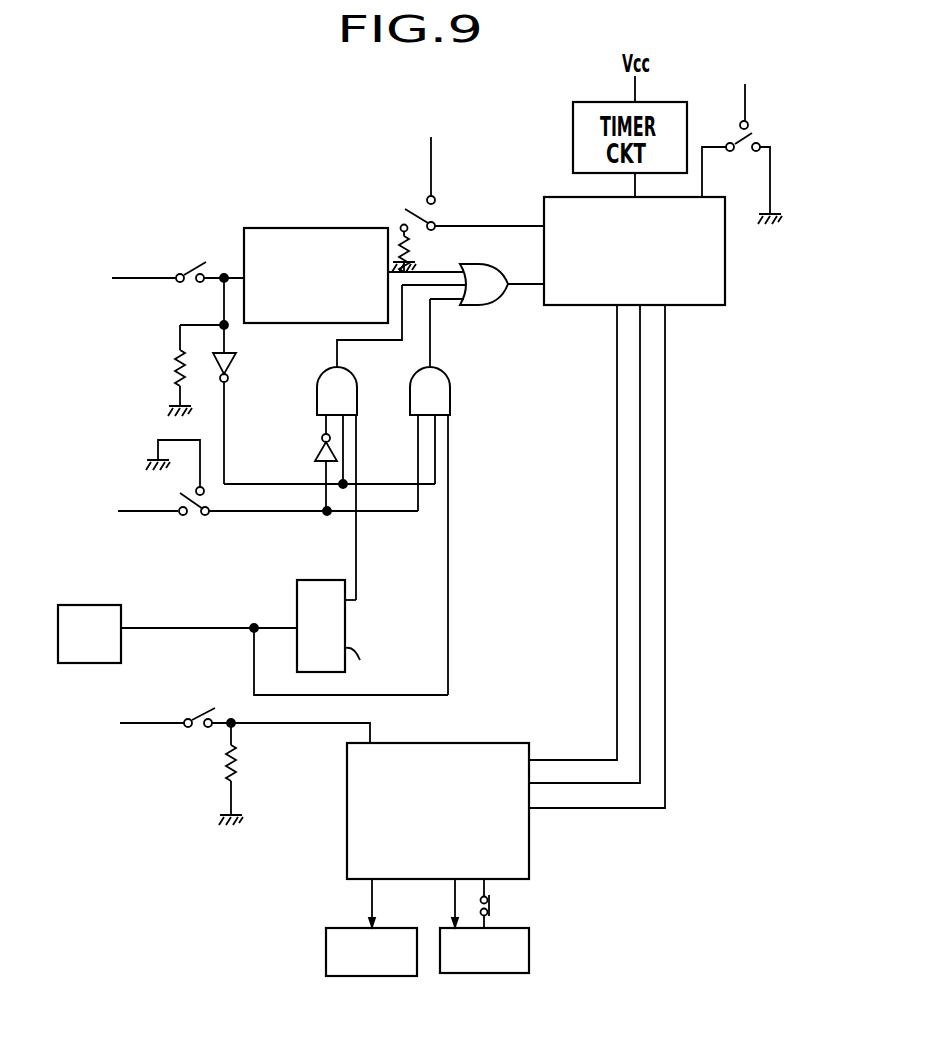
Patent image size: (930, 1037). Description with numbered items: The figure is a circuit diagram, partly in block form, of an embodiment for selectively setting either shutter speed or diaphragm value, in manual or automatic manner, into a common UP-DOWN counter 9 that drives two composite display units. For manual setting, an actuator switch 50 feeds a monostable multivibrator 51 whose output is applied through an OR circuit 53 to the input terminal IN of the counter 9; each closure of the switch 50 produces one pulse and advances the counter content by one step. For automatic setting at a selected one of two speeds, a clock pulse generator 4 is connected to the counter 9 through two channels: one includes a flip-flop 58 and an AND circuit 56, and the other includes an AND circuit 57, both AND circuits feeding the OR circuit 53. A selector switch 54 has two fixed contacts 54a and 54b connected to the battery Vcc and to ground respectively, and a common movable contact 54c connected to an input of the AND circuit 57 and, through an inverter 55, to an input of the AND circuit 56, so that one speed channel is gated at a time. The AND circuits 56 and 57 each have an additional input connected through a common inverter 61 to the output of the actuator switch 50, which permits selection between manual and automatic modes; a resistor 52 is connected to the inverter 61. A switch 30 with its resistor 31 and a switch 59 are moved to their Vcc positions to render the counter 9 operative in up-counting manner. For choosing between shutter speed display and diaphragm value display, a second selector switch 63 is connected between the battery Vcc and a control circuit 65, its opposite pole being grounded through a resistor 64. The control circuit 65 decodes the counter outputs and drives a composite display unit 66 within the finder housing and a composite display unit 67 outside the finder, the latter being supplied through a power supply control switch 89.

The clock pulse generator 4 is at (98, 605).
The UP-DOWN counter 9 is at (712, 305).
The switch 30 is at (428, 219).
The resistor 31 is at (410, 248).
The actuator switch 50 is at (195, 272).
The monostable multivibrator 51 is at (333, 228).
The resistor 52 is at (178, 370).
The OR circuit 53 is at (490, 264).
The selector switch 54 is at (253, 507).
The fixed contact 54a is at (181, 518).
The fixed contact 54b is at (209, 515).
The common movable contact 54c is at (192, 516).
The inverter 55 is at (338, 450).
The AND circuit 56 is at (358, 392).
The AND circuit 57 is at (450, 385).
The flip-flop 58 is at (322, 580).
The switch 59 is at (740, 153).
The inverter 61 is at (218, 364).
The second selector switch 63 is at (200, 726).
The resistor 64 is at (237, 765).
The control circuit 65 is at (347, 825).
The composite display unit 66 is at (326, 956).
The composite display unit 67 is at (530, 950).
The power supply control switch 89 is at (492, 908).